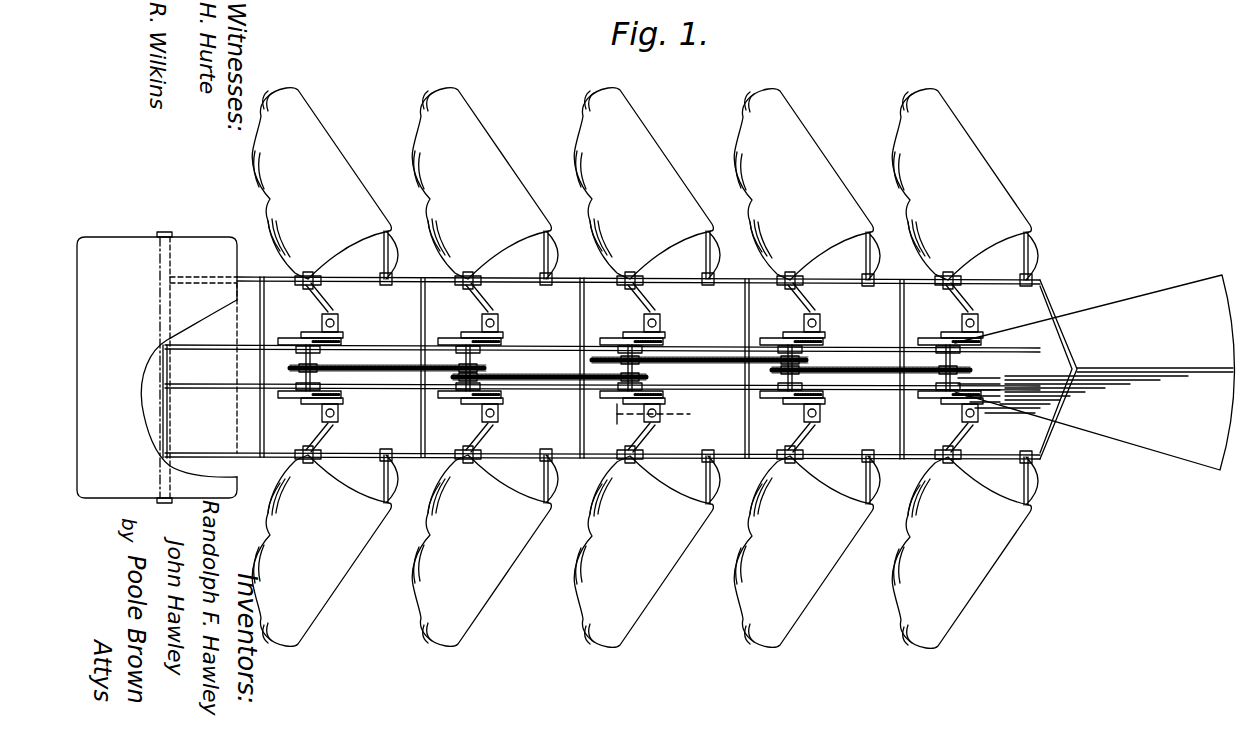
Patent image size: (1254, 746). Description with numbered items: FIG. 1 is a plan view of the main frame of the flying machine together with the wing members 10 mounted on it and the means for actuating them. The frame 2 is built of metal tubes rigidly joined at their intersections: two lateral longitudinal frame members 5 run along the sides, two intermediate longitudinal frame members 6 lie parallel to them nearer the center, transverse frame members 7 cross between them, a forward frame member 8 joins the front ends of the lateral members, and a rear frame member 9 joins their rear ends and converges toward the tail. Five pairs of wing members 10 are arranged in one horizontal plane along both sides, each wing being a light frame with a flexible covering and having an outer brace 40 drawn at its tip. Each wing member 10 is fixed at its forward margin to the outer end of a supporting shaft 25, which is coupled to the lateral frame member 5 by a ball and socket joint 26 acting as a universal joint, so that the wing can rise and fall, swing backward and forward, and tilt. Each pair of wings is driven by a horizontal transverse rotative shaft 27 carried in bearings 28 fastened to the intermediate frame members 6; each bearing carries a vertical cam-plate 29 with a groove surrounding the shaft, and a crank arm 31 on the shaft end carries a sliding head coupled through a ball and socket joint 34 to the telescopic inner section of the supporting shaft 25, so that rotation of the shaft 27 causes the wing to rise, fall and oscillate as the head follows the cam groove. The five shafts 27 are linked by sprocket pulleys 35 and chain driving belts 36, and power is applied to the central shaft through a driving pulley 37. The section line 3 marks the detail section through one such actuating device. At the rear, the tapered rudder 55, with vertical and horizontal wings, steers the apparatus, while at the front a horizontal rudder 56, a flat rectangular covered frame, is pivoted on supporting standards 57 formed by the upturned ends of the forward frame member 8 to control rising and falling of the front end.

The frame 2 is at (220, 367).
The section line 3 is at (652, 413).
The lateral longitudinal frame-member 5 is at (277, 278).
The intermediate longitudinal frame-member 6 is at (356, 342).
The transverse frame-member 7 is at (258, 426).
The forward frame member 8 is at (168, 420).
The rear frame-member 9 is at (1058, 322).
The wing member 10 is at (641, 368).
The supporting shaft 25 is at (318, 298).
The ball and socket joint 26 is at (320, 280).
The rotative shaft 27 is at (300, 352).
The bearing 28 is at (345, 340).
The cam-plate 29 is at (292, 339).
The crank arm 31 is at (492, 320).
The ball and socket joint 34 is at (334, 314).
The pulley 35 is at (300, 392).
The driving belt 36 is at (450, 366).
The driving pulley 37 is at (700, 345).
The wing braces 40 is at (394, 256).
The rudder 55 is at (1094, 372).
The horizontal rudder 56 is at (157, 367).
The supporting standard 57 is at (171, 233).